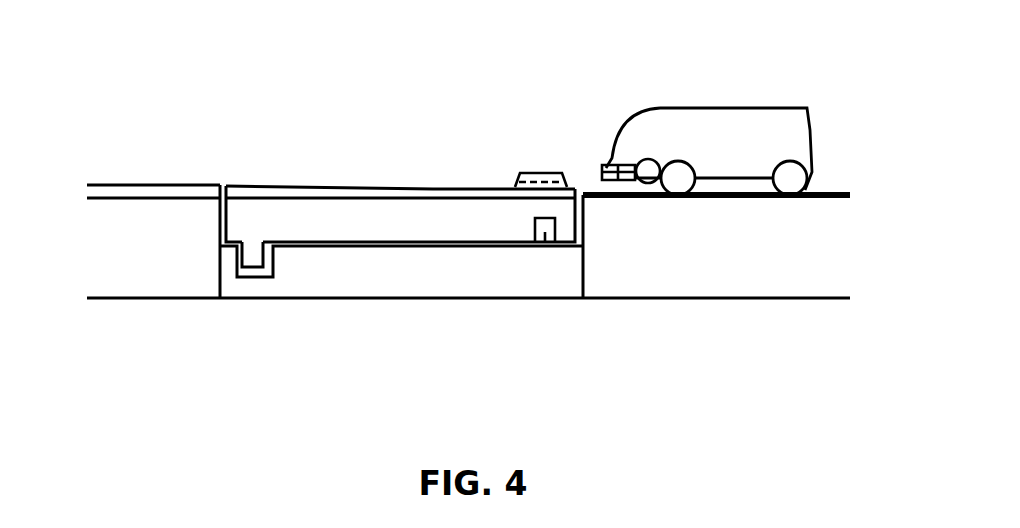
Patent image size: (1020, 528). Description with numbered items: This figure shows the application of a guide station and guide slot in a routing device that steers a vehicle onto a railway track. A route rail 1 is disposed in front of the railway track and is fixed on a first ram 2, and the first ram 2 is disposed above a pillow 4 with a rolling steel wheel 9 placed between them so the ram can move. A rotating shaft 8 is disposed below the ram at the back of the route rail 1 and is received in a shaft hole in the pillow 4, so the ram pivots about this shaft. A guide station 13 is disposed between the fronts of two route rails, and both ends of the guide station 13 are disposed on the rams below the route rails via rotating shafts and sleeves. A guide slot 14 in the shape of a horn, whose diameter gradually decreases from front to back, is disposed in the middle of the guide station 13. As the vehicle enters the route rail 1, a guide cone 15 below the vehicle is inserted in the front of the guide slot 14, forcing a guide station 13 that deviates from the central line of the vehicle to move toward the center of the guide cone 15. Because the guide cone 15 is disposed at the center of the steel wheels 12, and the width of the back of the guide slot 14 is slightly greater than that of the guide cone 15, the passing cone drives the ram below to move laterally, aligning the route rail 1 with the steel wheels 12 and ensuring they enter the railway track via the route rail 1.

The route rail 1 is at (282, 190).
The first ram 2 is at (347, 213).
The pillow 4 is at (415, 267).
The rotating shaft 8 is at (255, 253).
The rolling steel wheel 9 is at (547, 242).
The steel wheels 12 is at (650, 175).
The guide station 13 is at (517, 180).
The guide slot 14 is at (543, 181).
The guide cone 15 is at (605, 168).